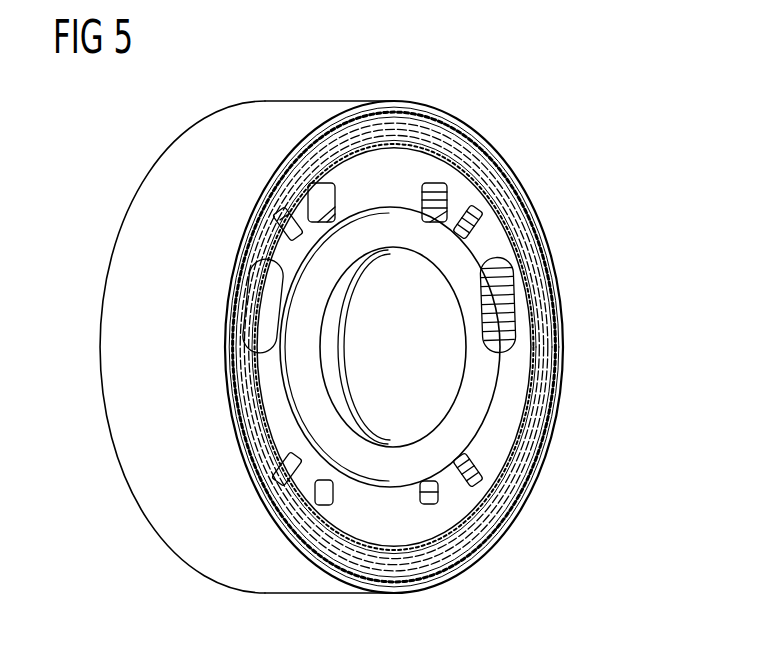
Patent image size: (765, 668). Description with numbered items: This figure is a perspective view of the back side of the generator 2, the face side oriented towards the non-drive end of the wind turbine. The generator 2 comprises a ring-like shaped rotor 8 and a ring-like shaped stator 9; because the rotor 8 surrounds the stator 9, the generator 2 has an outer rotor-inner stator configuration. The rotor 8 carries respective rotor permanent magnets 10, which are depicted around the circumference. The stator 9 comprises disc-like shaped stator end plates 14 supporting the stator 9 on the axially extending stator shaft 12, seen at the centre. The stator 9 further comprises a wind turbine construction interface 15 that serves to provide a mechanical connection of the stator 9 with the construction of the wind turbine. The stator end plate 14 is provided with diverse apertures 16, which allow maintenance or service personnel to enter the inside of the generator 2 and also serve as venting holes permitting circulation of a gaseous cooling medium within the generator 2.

The generator 2 is at (546, 122).
The rotor 8 is at (556, 229).
The stator 9 is at (546, 447).
The rotor permanent magnets 10 is at (536, 302).
The stator shaft 12 is at (433, 380).
The stator end plates 14 is at (516, 345).
The wind turbine construction interface 15 is at (455, 430).
The apertures 16 is at (283, 220).